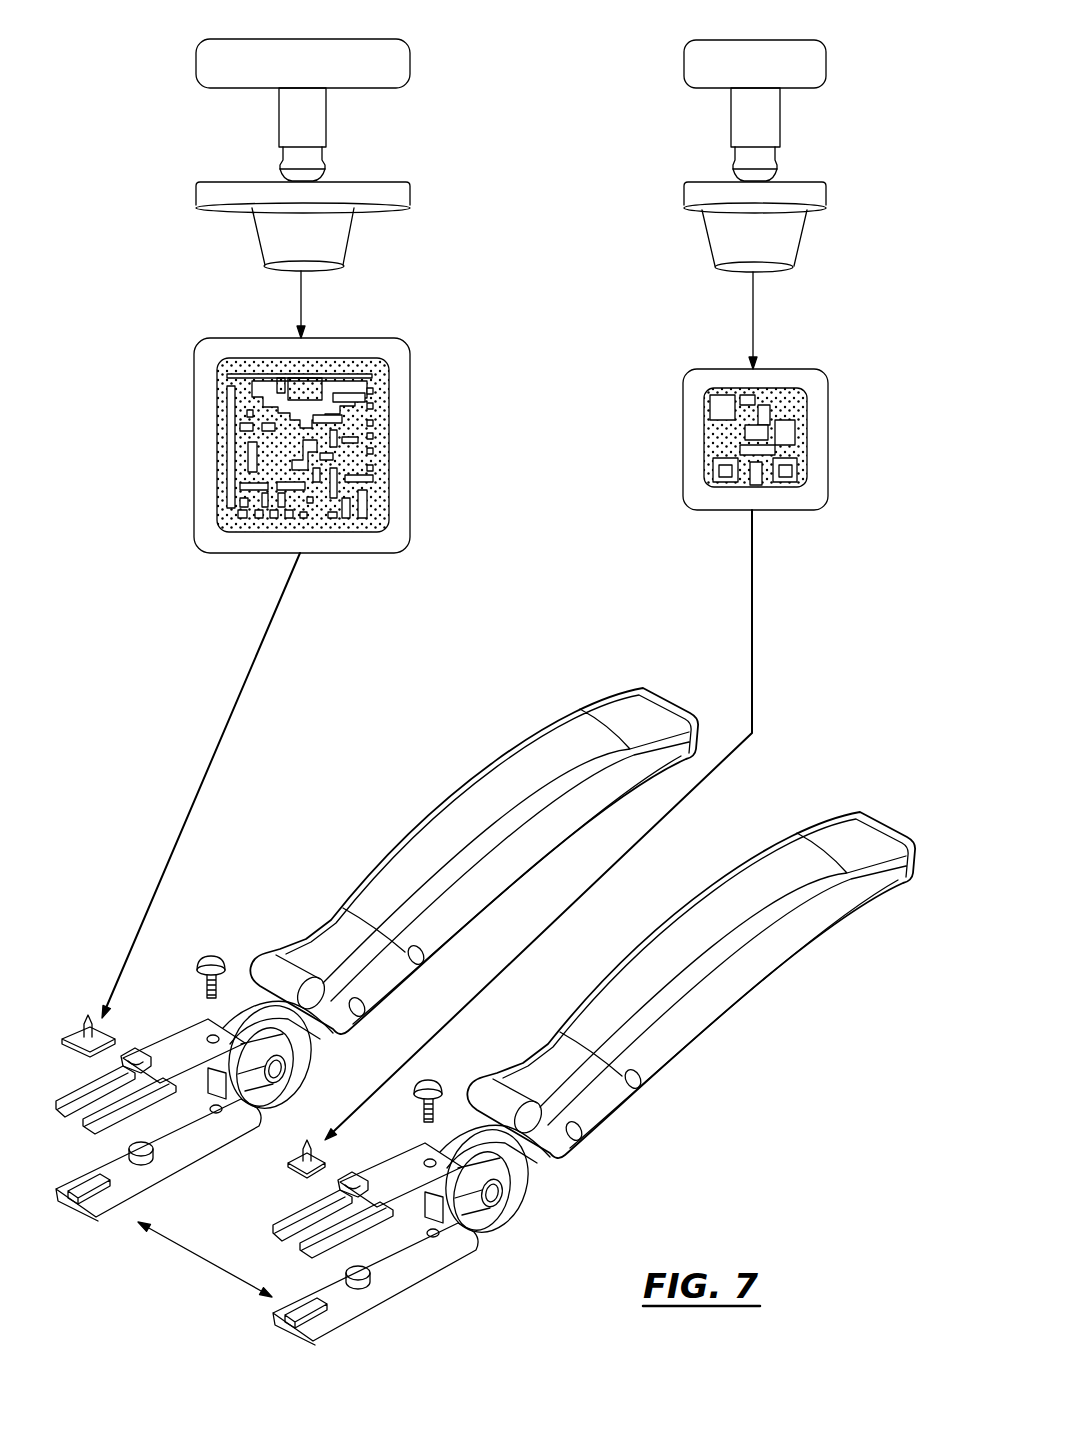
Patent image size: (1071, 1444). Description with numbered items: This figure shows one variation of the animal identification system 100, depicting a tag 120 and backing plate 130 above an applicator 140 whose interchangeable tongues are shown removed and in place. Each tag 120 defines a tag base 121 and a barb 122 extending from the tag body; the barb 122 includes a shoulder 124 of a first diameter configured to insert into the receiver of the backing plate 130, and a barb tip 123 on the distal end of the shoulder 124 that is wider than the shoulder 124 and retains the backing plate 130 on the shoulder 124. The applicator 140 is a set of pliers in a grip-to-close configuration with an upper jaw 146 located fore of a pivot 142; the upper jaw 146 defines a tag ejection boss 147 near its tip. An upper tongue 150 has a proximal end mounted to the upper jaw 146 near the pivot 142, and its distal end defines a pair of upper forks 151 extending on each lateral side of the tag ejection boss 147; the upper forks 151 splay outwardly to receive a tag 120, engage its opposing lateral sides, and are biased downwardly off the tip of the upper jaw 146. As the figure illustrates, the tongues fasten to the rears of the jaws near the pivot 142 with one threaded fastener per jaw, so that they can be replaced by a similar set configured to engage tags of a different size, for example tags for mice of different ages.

The animal identification system 100 is at (124, 53).
The tag 120 is at (827, 65).
The tag base 121 is at (798, 289).
The barb 122 is at (777, 120).
The barb tip 123 is at (737, 177).
The shoulder 124 is at (823, 168).
The backing plate 130 is at (742, 218).
The applicator 140 is at (593, 1112).
The pivot 142 is at (492, 1193).
The upper jaw 146 is at (413, 1278).
The tag ejection boss 147 is at (327, 1315).
The upper tongue 150 is at (300, 1222).
The upper forks 151 is at (346, 1230).